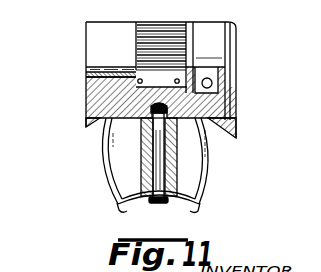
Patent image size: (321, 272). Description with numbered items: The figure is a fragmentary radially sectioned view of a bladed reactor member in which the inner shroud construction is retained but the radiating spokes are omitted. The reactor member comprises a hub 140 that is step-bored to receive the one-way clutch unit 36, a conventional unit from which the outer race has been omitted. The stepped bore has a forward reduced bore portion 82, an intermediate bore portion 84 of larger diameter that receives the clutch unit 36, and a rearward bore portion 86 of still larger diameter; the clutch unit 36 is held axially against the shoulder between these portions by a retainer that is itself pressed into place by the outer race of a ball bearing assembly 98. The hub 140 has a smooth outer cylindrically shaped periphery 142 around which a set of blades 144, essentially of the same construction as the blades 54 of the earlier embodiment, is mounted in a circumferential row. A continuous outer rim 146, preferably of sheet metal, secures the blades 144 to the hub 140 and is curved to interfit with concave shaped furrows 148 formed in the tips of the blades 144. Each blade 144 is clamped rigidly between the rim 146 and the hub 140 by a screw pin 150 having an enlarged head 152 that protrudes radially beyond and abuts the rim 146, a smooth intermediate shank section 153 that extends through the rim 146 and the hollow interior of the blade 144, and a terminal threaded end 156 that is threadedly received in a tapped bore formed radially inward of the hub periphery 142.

The one-way clutch unit 36 is at (172, 69).
The blades 54 is at (215, 186).
The forward reduced bore portion 82 is at (98, 73).
The intermediate bore portion 84 is at (151, 89).
The rearward bore portion 86 is at (221, 97).
The ball bearing assembly 98 is at (212, 83).
The hub 140 is at (88, 108).
The outer cylindrically shaped periphery 142 is at (233, 124).
The blades 144 is at (200, 162).
The continuous outer rim 146 is at (194, 213).
The concave shaped furrows 148 is at (125, 213).
The screw pin 150 is at (152, 170).
The enlarged head 152 is at (163, 205).
The smooth intermediate shank section 153 is at (158, 146).
The terminal threaded end 156 is at (161, 74).